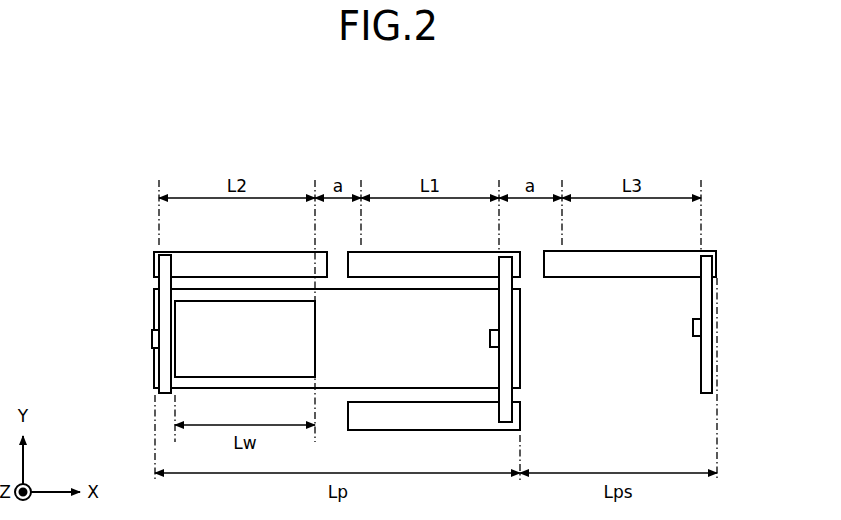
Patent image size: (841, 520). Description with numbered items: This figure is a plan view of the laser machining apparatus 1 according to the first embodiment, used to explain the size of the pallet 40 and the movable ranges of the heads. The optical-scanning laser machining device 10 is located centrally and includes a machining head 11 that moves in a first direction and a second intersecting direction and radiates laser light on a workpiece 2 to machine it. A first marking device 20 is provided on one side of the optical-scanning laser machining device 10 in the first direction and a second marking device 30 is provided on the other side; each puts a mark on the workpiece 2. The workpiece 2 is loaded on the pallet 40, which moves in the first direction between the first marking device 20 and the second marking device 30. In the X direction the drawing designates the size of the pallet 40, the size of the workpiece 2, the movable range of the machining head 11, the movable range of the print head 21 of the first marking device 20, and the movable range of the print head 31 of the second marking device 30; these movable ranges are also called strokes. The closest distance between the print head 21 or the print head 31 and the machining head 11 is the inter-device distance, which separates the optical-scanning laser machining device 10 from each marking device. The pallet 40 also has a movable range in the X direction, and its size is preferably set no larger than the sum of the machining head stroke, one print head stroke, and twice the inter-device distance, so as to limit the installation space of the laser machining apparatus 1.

The laser machining apparatus 1 is at (98, 143).
The workpiece 2 is at (303, 328).
The optical-scanning laser machining device 10 is at (535, 412).
The machining head 11 is at (488, 340).
The first marking device 20 is at (143, 242).
The print head 21 is at (150, 338).
The second marking device 30 is at (727, 233).
The print head 31 is at (691, 326).
The pallet 40 is at (520, 318).